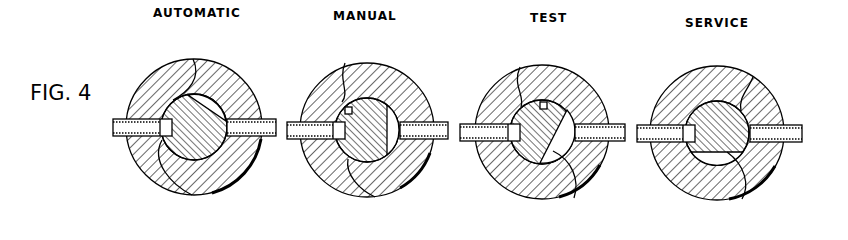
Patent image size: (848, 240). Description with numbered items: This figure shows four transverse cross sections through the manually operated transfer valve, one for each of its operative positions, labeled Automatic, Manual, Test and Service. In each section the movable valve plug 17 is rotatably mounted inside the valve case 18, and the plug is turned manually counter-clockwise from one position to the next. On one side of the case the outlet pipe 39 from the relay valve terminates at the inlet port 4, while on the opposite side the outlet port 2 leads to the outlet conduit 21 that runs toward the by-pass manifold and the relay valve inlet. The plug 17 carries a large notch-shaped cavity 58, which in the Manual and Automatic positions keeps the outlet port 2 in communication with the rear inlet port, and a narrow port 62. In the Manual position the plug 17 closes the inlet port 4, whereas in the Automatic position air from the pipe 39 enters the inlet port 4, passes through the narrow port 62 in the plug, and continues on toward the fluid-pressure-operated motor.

The outlet port 2 is at (244, 120).
The inlet port 4 is at (155, 127).
The valve plug 17 is at (182, 108).
The valve case 18 is at (160, 76).
The outlet conduit 21 is at (262, 135).
The outlet pipe 39 is at (124, 117).
The notch-shaped cavity 58 is at (212, 108).
The narrow port 62 is at (162, 135).